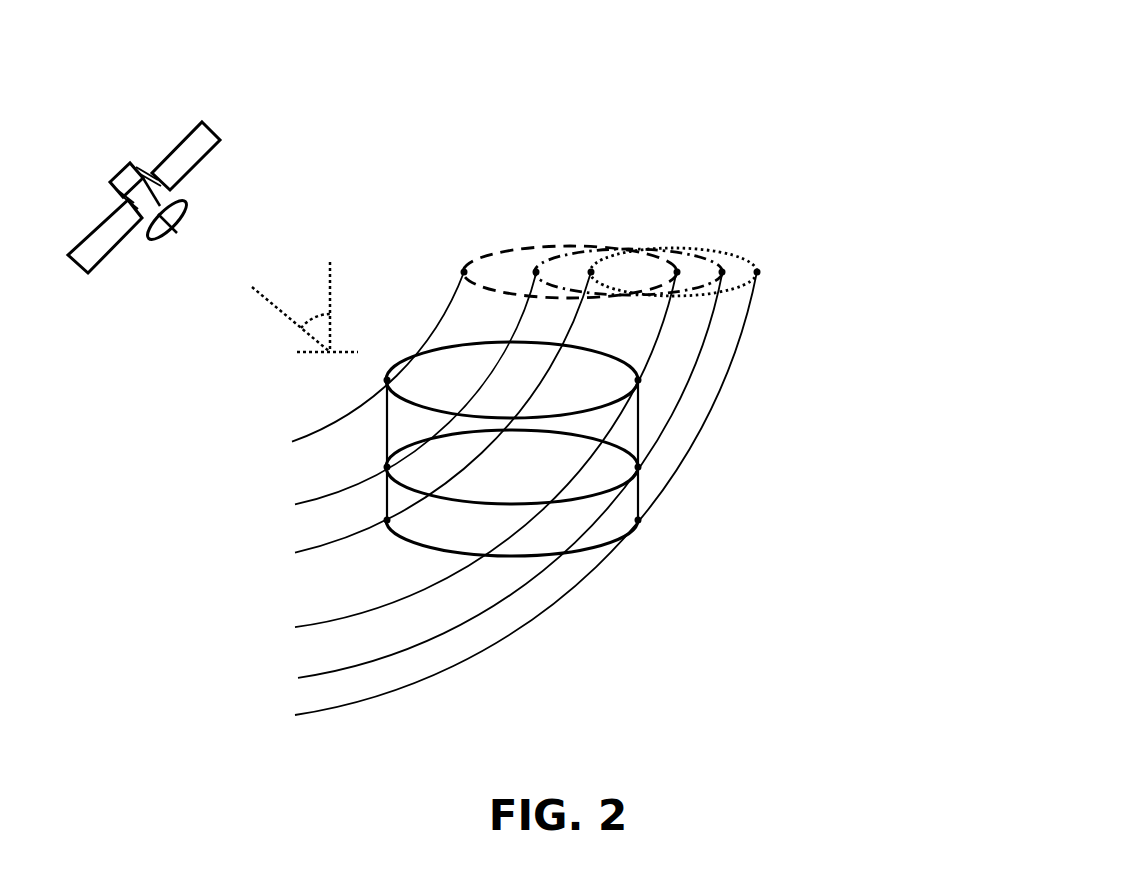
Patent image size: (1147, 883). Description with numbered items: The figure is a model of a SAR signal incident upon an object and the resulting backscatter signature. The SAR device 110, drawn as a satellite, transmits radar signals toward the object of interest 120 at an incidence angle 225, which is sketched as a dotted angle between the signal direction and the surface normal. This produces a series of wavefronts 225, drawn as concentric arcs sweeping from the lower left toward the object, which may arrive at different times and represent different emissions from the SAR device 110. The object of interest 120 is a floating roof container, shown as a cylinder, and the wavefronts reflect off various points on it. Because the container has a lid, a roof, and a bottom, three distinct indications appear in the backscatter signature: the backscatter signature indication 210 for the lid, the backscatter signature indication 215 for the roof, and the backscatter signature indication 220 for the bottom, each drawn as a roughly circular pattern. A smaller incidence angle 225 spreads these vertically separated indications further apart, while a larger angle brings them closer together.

The SAR device 110 is at (222, 167).
The object of interest 120 is at (615, 475).
The backscatter signature indication 210 is at (473, 252).
The backscatter signature indication 215 is at (628, 242).
The backscatter signature indication 220 is at (765, 263).
The incidence angle / wavefronts 225 is at (288, 328).